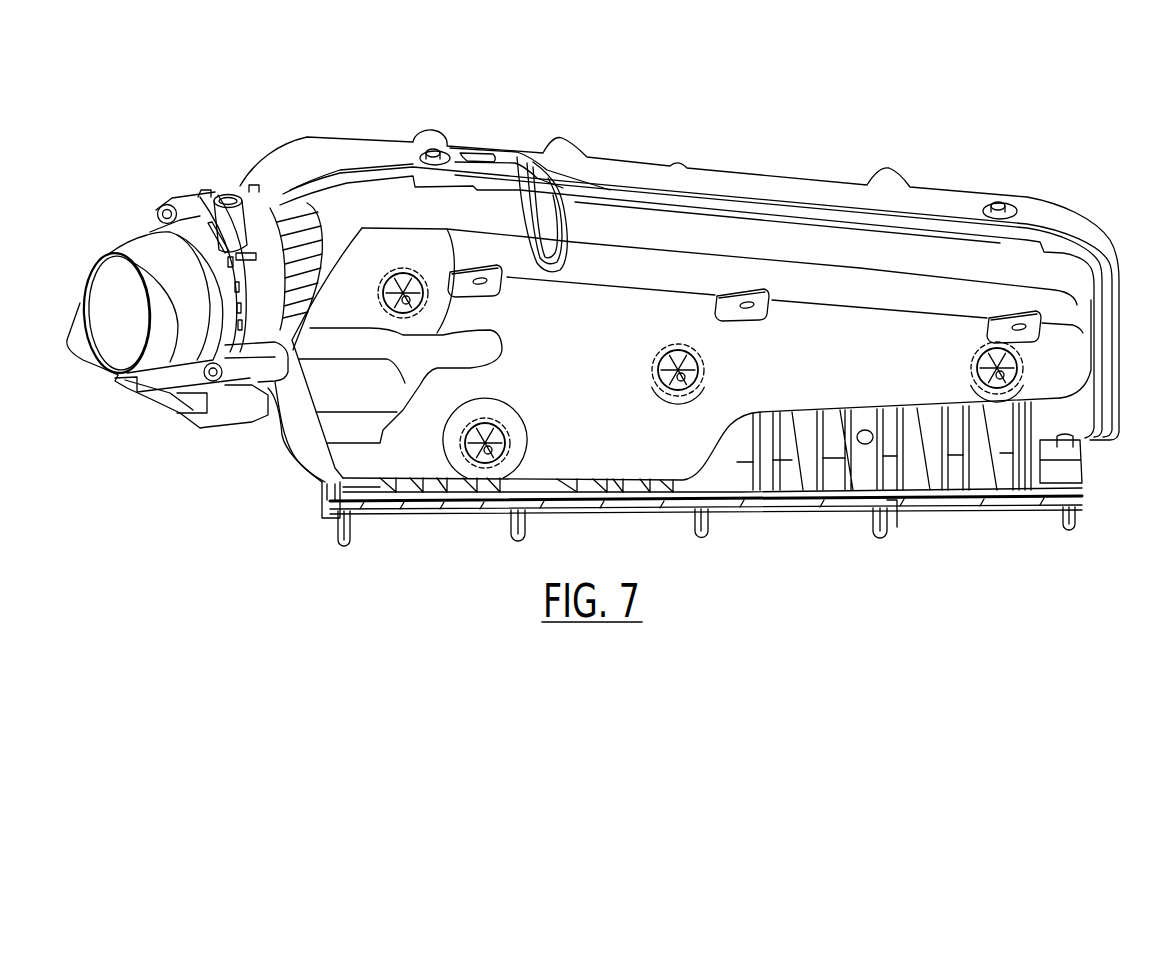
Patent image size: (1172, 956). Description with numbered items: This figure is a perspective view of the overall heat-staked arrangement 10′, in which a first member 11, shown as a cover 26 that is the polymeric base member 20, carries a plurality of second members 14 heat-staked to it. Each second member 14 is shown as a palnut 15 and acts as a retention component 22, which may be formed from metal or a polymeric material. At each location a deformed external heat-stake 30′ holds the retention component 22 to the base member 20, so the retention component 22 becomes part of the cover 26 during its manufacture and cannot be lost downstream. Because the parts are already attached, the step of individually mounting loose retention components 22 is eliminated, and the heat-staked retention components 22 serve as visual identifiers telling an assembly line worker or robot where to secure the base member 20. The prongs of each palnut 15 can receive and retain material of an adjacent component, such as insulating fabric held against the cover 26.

The air intake assembly 10′ is at (649, 113).
The first member 11 is at (593, 348).
The polymeric base member 20 is at (593, 348).
The cover 26 is at (952, 248).
The second member 14 is at (700, 330).
The palnut 15 is at (700, 330).
The retention component 22 is at (417, 277).
The deformed external heat-stake 30′ is at (390, 267).